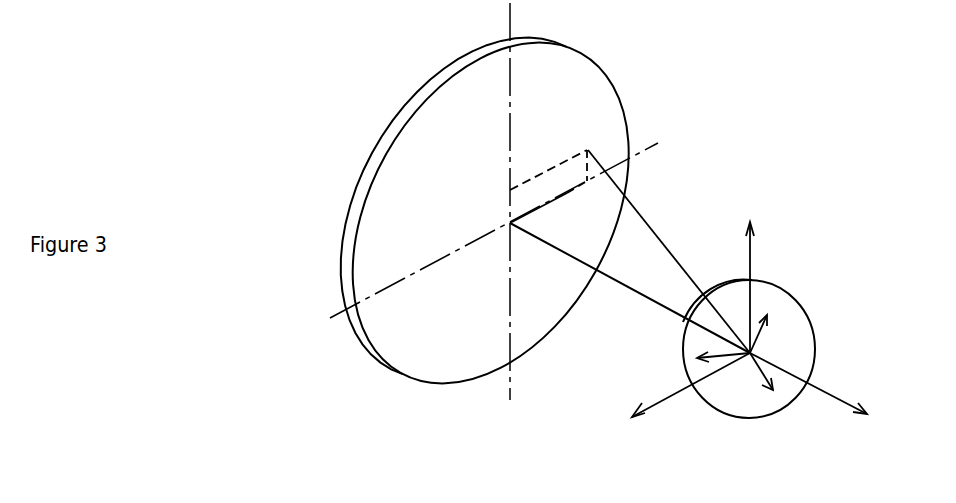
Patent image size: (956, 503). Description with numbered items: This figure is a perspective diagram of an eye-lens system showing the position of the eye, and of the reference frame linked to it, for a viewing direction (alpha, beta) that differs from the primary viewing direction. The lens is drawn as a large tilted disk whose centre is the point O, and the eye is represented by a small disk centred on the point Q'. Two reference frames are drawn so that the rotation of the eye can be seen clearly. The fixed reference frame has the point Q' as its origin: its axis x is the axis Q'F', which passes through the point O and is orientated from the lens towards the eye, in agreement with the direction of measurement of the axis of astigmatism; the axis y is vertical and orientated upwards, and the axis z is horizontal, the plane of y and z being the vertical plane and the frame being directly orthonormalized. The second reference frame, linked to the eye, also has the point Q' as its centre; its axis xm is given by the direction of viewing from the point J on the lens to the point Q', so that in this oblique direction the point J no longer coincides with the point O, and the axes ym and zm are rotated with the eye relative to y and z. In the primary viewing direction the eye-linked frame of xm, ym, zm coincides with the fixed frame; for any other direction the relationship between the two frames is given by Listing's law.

The point O is at (494, 201).
The point J is at (630, 246).
The point Q' is at (662, 320).
The x axis x is at (810, 383).
The y axis y is at (757, 287).
The z axis z is at (691, 395).
The x_m axis xm is at (754, 377).
The y_m axis ym is at (775, 333).
The z_m axis zm is at (720, 348).